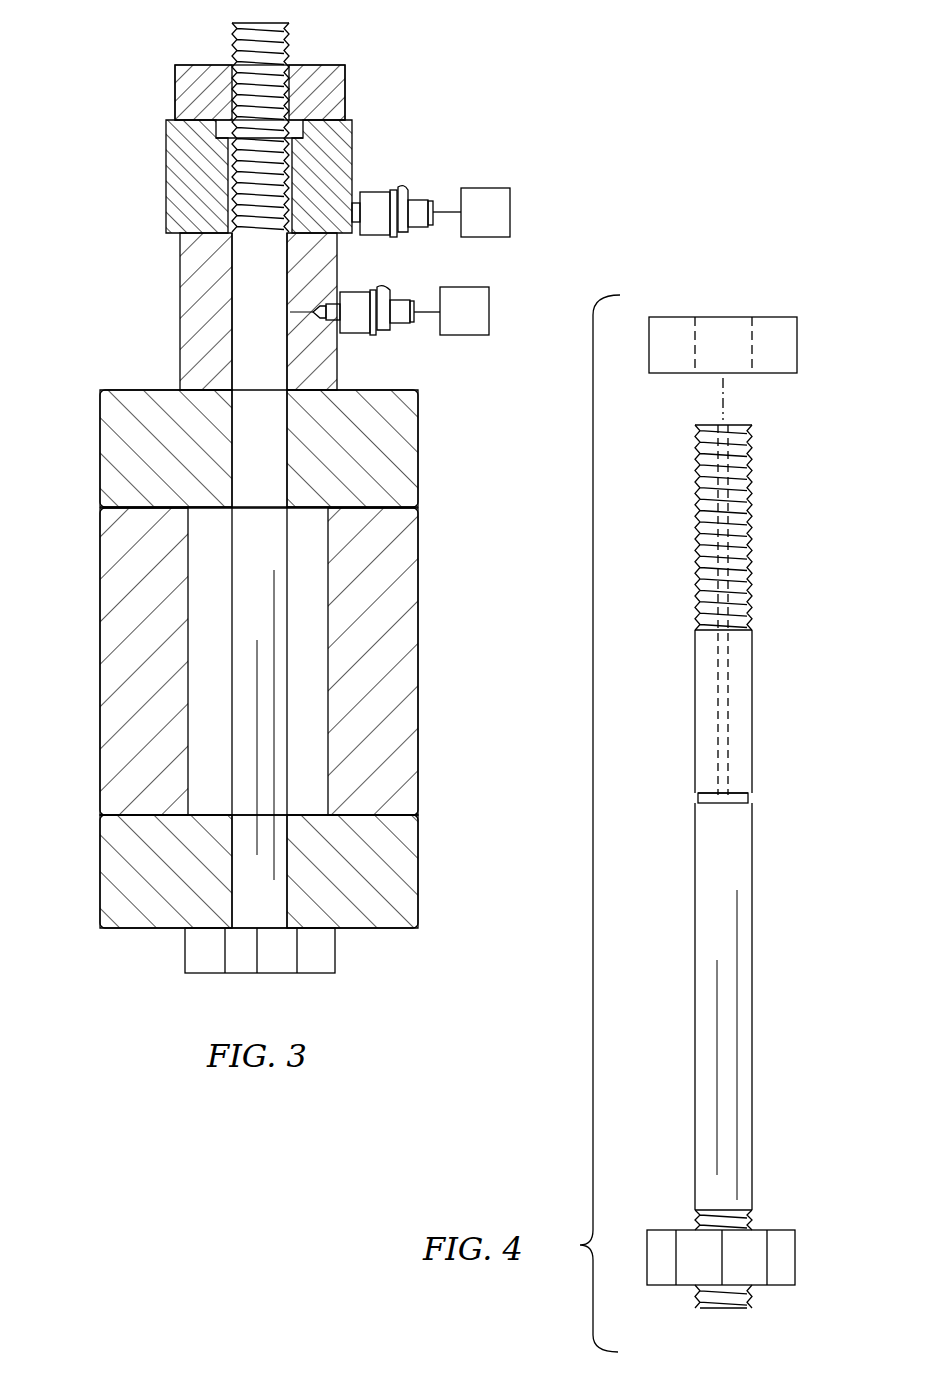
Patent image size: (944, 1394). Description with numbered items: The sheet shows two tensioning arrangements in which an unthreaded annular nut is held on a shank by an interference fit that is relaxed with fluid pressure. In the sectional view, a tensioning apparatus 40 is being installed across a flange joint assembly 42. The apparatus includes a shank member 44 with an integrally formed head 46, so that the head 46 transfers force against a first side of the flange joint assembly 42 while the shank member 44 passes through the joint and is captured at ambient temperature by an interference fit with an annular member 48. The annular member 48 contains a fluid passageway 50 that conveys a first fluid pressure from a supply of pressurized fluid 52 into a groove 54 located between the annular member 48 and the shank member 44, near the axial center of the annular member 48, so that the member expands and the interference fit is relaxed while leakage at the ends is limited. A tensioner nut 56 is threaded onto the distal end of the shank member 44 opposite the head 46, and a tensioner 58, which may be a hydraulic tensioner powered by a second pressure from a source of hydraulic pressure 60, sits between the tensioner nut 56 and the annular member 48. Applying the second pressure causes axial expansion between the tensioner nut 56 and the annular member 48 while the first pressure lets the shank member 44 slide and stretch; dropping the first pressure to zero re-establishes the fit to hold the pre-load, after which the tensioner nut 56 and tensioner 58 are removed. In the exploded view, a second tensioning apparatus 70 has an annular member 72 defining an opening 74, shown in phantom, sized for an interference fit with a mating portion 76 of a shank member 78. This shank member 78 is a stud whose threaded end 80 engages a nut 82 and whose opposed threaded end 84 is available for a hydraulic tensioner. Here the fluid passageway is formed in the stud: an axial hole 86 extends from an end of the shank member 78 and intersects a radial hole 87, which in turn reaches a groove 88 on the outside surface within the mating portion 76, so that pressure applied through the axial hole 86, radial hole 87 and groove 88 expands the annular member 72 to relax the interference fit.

In FIG. 3, the tensioning apparatus 40 is at (148, 256).
In FIG. 3, the flange joint assembly 42 is at (88, 392).
In FIG. 3, the shank member 44 is at (290, 608).
In FIG. 3, the head 46 is at (243, 975).
In FIG. 3, the annular member 48 is at (180, 358).
In FIG. 3, the fluid passageway 50 is at (330, 303).
In FIG. 3, the supply of pressurized fluid 52 is at (462, 287).
In FIG. 3, the groove 54 is at (230, 316).
In FIG. 3, the tensioner nut 56 is at (175, 93).
In FIG. 3, the tensioner 58 is at (166, 175).
In FIG. 3, the source of hydraulic pressure 60 is at (480, 188).
In FIG. 4, the tensioning apparatus 70 is at (845, 567).
In FIG. 4, the annular member 72 is at (797, 343).
In FIG. 4, the opening 74 is at (723, 350).
In FIG. 4, the mating portion 76 is at (765, 715).
In FIG. 4, the shank member 78 is at (752, 962).
In FIG. 4, the threaded end 80 is at (748, 1305).
In FIG. 4, the nut 82 is at (797, 1256).
In FIG. 4, the opposed threaded end 84 is at (752, 472).
In FIG. 4, the axial hole 86 is at (712, 662).
In FIG. 4, the radial hole 87 is at (722, 803).
In FIG. 4, the groove 88 is at (698, 800).